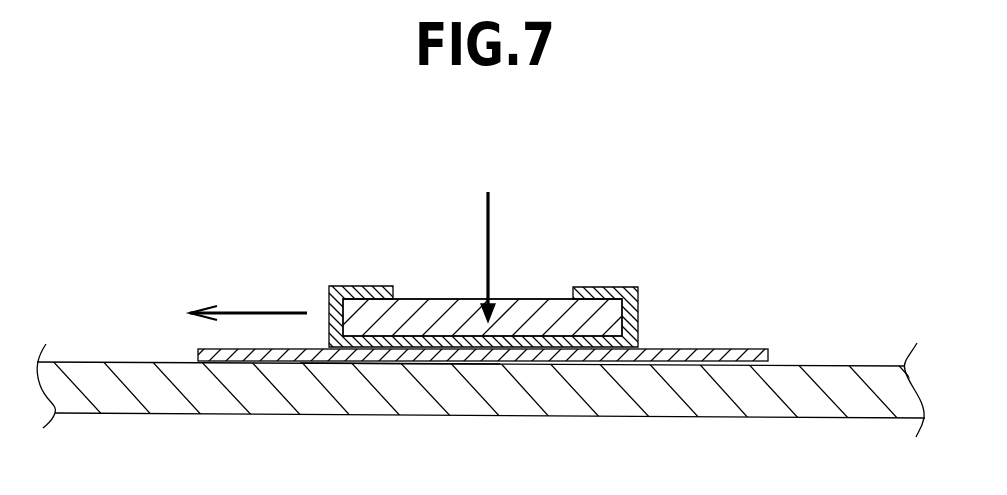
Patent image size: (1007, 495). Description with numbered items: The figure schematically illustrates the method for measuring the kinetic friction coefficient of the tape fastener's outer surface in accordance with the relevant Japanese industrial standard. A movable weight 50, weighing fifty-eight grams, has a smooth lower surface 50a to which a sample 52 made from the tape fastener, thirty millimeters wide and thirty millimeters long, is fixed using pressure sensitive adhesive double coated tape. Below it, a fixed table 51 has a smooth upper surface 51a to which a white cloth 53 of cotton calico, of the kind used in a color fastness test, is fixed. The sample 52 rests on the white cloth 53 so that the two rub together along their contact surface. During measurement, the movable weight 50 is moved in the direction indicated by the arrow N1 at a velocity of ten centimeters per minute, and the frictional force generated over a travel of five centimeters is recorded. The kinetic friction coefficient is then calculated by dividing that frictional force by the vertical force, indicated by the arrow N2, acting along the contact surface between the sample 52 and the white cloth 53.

The movable weight 50 is at (552, 303).
The lower surface 50a is at (410, 298).
The fixed table 51 is at (617, 402).
The upper surface 51a is at (412, 366).
The sample 52 is at (633, 330).
The white cloth 53 is at (452, 362).
The arrow indicating direction of movement N1 is at (268, 312).
The arrow indicating vertical force direction N2 is at (489, 225).